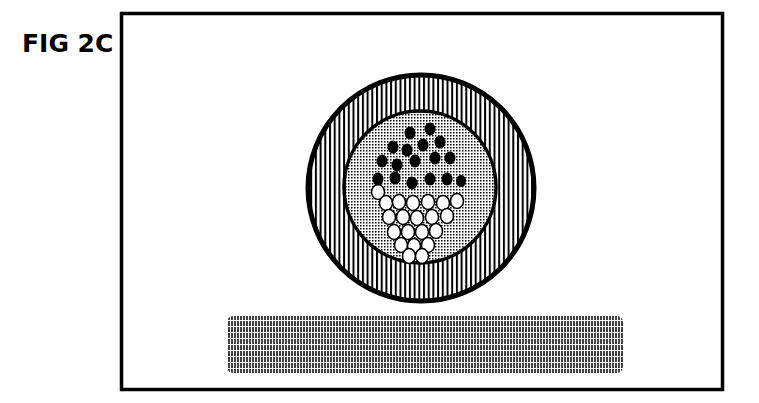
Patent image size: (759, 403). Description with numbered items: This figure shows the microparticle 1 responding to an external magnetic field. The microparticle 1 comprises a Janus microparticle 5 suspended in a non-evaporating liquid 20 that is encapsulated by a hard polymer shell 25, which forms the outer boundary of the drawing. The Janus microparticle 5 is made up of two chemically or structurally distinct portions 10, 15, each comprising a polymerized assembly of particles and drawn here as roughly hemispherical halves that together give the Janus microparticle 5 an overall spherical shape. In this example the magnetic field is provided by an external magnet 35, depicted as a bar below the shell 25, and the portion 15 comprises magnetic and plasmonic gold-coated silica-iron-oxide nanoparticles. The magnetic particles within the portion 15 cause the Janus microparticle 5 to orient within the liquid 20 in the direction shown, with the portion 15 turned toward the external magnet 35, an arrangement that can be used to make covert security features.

The microparticle 1 is at (315, 90).
The Janus microparticle 5 is at (419, 198).
The portion 10 is at (380, 170).
The portion 15 is at (467, 200).
The non-evaporating liquid 20 is at (477, 220).
The polymer shell 25 is at (455, 88).
The external magnet 35 is at (253, 353).